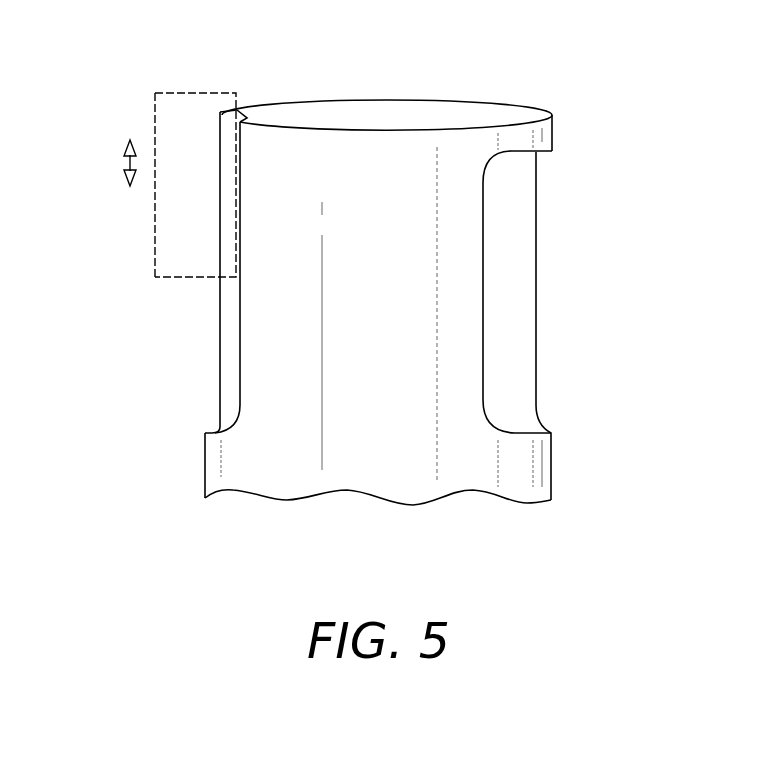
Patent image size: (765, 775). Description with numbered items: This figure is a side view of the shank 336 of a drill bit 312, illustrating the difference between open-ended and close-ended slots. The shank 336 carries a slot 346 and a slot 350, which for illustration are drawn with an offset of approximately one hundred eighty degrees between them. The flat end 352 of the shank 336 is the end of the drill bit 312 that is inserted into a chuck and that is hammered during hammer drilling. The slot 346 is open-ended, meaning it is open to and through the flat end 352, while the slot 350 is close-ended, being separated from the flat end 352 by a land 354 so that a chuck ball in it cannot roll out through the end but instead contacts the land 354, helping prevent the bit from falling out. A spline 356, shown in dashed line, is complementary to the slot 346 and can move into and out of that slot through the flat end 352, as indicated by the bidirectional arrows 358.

The drill bit 312 is at (181, 68).
The shank 336 is at (293, 445).
The slot 346 is at (222, 313).
The slot 350 is at (520, 318).
The flat end 352 is at (385, 110).
The land 354 is at (553, 128).
The spline 356 is at (156, 245).
The bidirectional arrows 358 is at (128, 161).